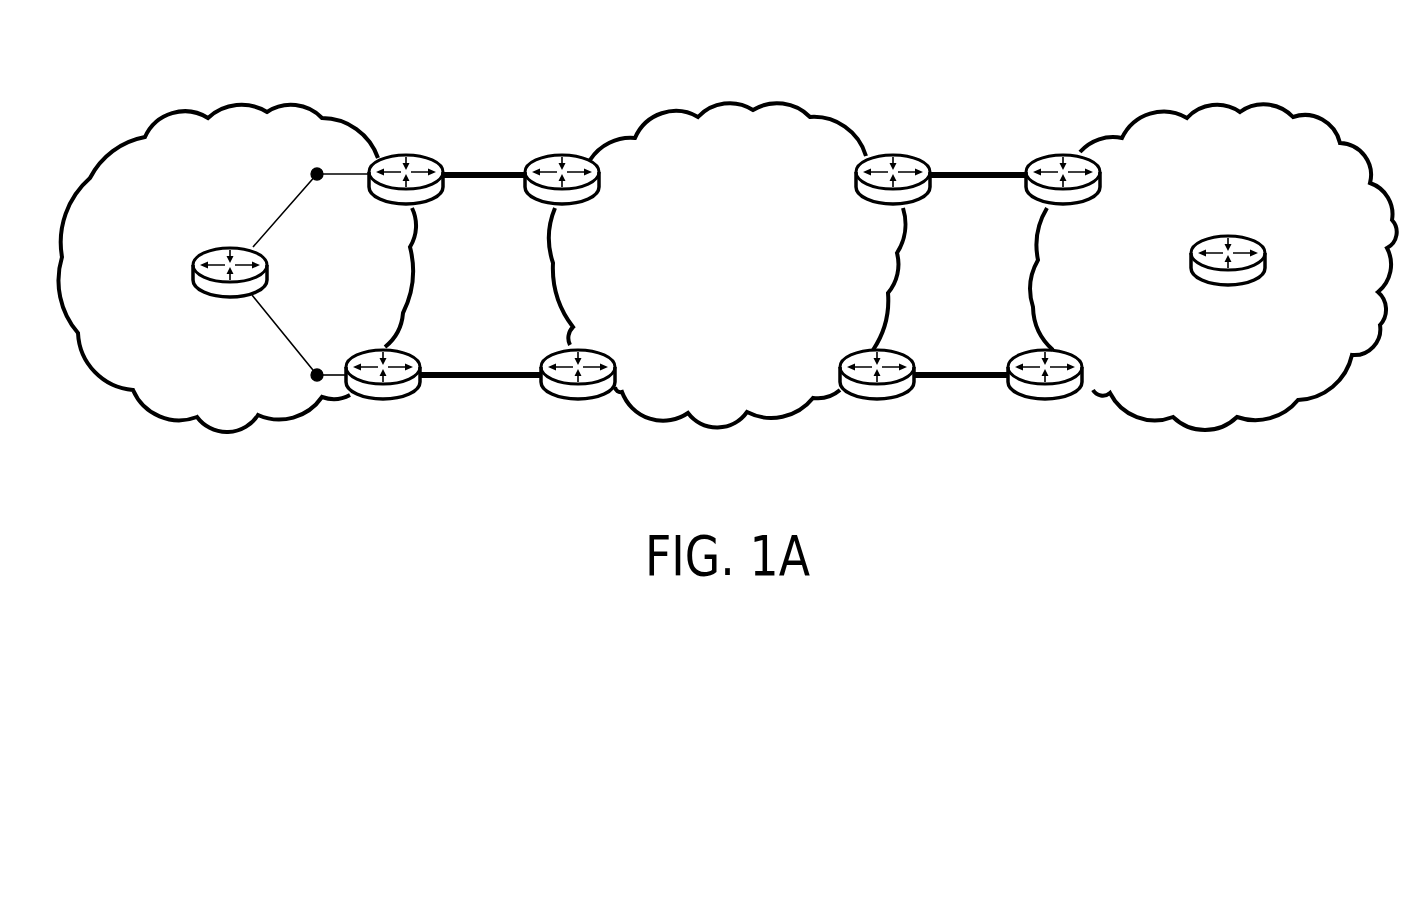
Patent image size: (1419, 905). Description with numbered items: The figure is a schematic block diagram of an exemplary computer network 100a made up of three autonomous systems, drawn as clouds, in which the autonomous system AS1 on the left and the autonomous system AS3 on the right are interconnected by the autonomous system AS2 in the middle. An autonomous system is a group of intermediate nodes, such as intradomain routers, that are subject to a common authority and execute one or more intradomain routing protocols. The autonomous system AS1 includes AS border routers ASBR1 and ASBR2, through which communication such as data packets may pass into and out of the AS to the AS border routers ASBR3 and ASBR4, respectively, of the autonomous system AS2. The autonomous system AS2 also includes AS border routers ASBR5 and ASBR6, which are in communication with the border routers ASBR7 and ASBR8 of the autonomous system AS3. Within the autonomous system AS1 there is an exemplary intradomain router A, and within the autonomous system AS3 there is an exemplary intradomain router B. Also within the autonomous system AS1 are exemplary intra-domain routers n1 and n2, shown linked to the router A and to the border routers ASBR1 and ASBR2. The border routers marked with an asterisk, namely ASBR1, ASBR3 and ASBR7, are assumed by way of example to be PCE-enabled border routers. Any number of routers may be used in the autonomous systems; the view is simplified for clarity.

The computer network 100a is at (727, 355).
The autonomous system AS1 is at (237, 268).
The autonomous system AS2 is at (727, 265).
The autonomous system AS3 is at (1213, 267).
The intradomain router A is at (220, 249).
The intradomain router B is at (1243, 281).
The intra-domain router n1 is at (321, 160).
The intra-domain router n2 is at (309, 386).
The AS border router ASBR1 is at (419, 146).
The AS border router ASBR2 is at (372, 402).
The AS border router ASBR3 is at (560, 147).
The AS border router ASBR4 is at (574, 402).
The AS border router ASBR5 is at (905, 146).
The AS border router ASBR6 is at (882, 402).
The AS border router ASBR7 is at (1056, 146).
The AS border router ASBR8 is at (1050, 402).